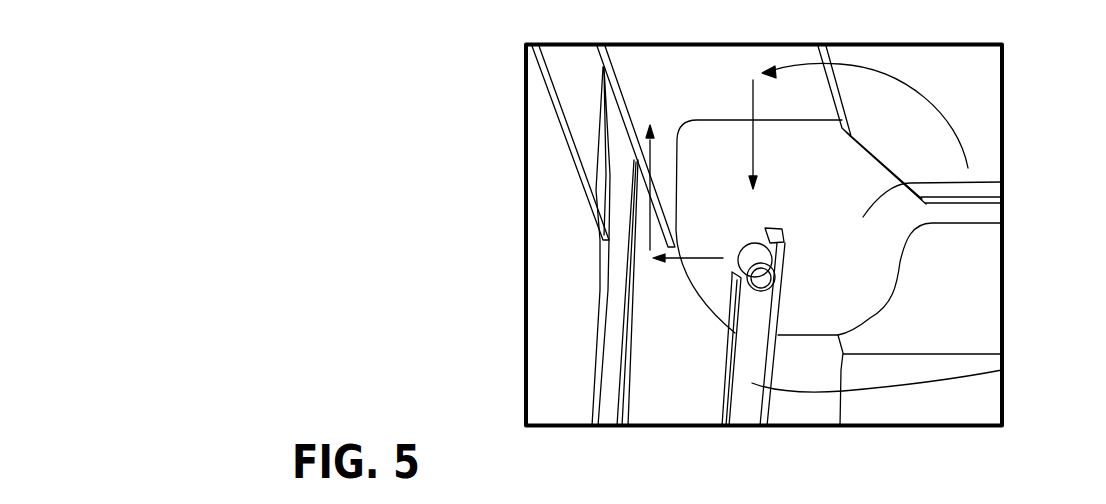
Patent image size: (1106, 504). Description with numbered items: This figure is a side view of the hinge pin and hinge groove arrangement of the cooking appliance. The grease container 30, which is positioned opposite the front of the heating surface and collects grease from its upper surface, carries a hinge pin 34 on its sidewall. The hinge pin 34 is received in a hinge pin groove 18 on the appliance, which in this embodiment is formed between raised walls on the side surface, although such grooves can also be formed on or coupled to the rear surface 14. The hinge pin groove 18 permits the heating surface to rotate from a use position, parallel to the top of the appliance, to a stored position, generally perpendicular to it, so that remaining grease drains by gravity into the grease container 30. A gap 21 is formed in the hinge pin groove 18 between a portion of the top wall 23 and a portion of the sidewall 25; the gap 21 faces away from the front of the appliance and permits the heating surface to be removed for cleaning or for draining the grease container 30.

The rear surface 14 is at (562, 367).
The hinge pin grooves 18 is at (1002, 370).
The gap 21 is at (740, 268).
The top wall 23 is at (779, 226).
The sidewall 25 is at (727, 350).
The grease container 30 is at (1002, 182).
The hinge pin 34 is at (772, 282).